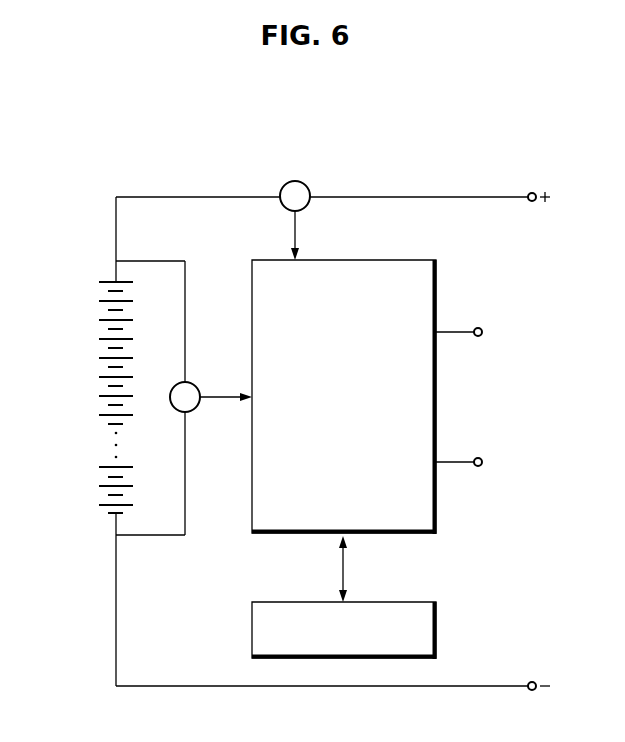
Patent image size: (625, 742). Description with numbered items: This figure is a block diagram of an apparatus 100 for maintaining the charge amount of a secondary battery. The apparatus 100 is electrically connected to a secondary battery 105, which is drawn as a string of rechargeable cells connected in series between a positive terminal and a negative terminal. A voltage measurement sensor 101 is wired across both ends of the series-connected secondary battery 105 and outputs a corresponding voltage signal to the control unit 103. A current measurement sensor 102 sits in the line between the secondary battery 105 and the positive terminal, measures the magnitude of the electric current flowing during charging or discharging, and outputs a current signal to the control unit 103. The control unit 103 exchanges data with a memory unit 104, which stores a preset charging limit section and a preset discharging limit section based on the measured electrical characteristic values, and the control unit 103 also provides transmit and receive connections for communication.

The apparatus for maintaining a charge amount of a secondary battery 100 is at (188, 127).
The voltage measurement sensor 101 is at (197, 385).
The current measurement sensor 102 is at (297, 182).
The control unit 103 is at (438, 274).
The memory unit 104 is at (412, 602).
The secondary battery 105 is at (98, 301).